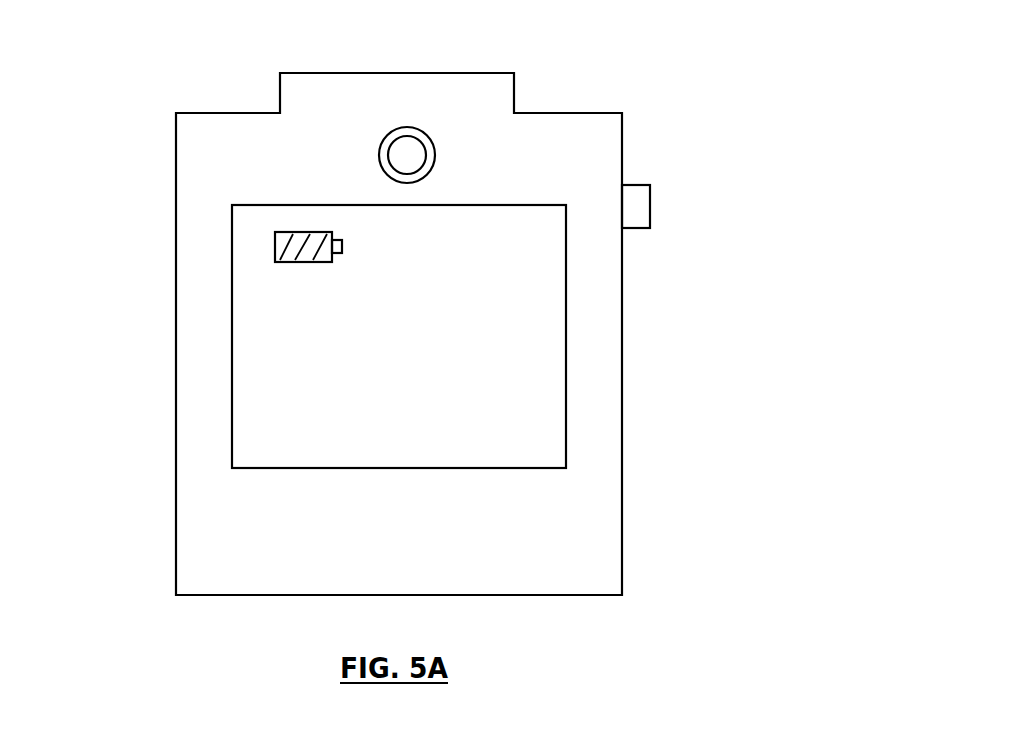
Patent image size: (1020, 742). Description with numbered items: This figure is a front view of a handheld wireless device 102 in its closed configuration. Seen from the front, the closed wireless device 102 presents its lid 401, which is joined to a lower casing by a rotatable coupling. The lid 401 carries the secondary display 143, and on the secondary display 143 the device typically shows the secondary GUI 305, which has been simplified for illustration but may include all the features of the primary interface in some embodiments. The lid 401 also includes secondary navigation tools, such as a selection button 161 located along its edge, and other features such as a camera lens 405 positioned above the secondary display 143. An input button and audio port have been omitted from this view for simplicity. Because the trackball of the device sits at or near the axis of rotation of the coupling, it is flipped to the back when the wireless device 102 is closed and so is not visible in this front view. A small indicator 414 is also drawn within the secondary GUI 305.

The wireless device 102 is at (701, 110).
The lid 401 is at (263, 150).
The camera lens 405 is at (437, 161).
The selection button 161 is at (650, 214).
The secondary display 143 is at (232, 239).
The secondary GUI 305 is at (247, 268).
The battery indicator 414 is at (343, 254).